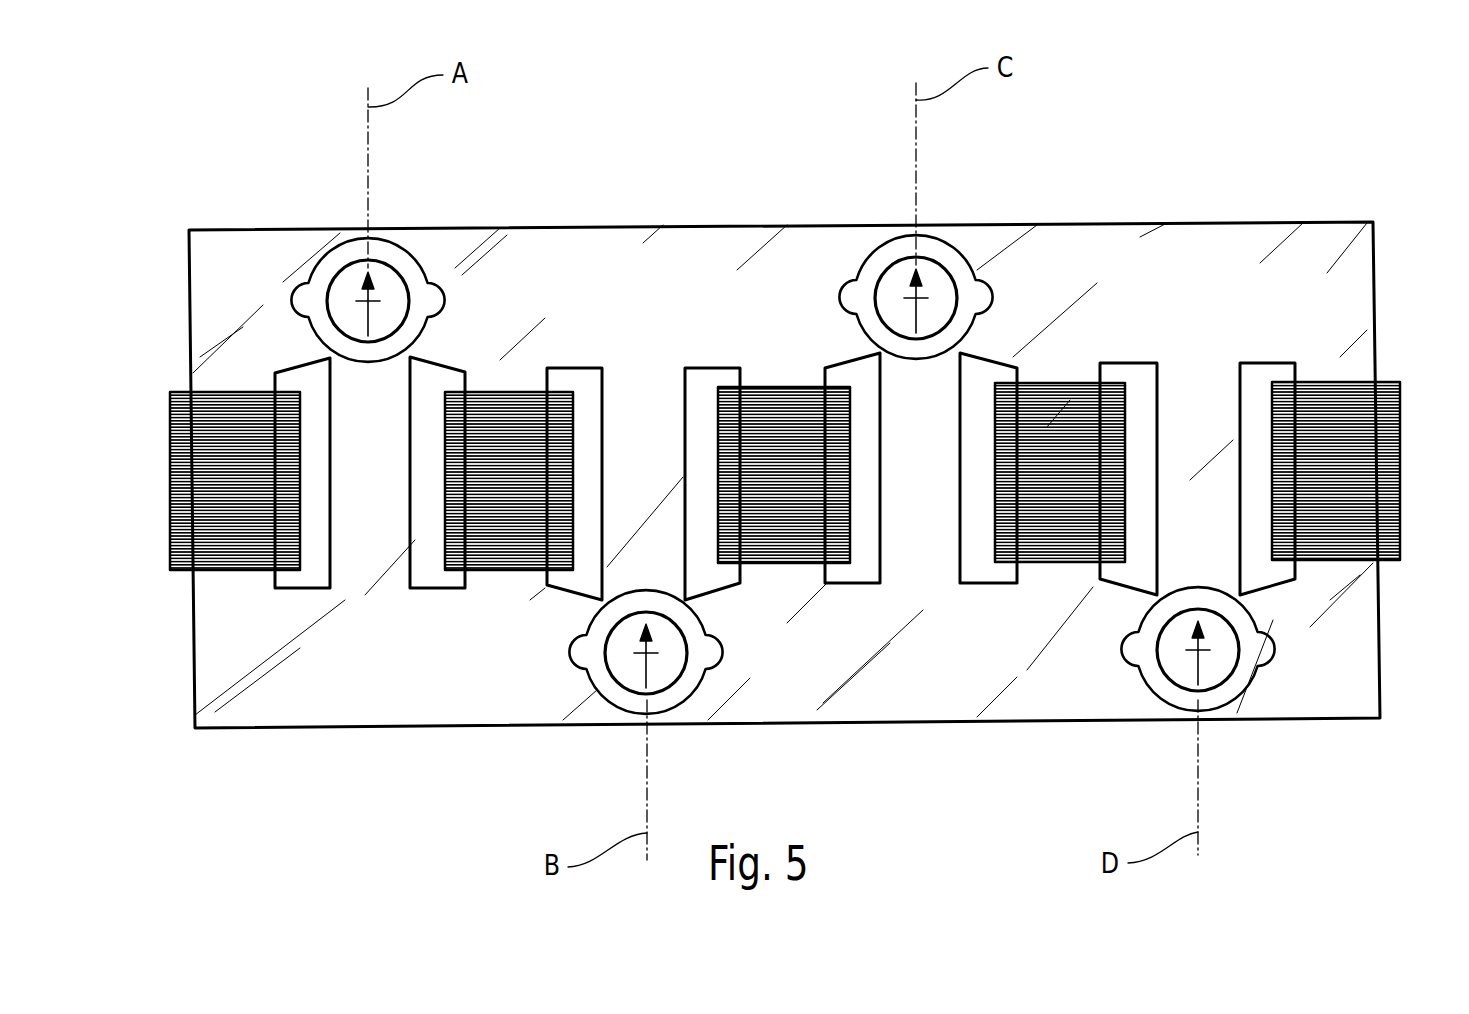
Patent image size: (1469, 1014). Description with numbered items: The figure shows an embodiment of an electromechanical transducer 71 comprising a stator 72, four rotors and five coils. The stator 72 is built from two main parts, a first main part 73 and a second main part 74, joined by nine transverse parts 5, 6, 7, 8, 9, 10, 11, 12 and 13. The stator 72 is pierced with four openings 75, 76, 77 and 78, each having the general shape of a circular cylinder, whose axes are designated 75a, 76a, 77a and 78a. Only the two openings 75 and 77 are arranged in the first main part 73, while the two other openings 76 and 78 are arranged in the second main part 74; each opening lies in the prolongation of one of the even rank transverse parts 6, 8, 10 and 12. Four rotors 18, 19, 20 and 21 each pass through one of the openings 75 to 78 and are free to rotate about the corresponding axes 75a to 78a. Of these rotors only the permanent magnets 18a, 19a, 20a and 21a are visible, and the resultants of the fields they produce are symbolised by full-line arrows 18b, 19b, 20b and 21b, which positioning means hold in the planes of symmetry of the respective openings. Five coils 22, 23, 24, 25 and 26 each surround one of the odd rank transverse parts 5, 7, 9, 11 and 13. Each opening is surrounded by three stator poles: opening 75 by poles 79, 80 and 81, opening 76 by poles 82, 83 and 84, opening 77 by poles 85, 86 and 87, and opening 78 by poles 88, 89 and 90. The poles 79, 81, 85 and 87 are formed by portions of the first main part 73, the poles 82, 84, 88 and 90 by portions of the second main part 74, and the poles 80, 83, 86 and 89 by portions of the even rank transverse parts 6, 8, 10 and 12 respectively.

The transverse part 5 is at (184, 600).
The transverse part 6 is at (349, 675).
The transverse part 7 is at (494, 673).
The transverse part 8 is at (655, 291).
The transverse part 9 is at (845, 641).
The transverse part 10 is at (977, 666).
The transverse part 11 is at (1076, 642).
The transverse part 12 is at (1161, 265).
The transverse part 13 is at (1402, 574).
The rotor 18 is at (408, 255).
The permanent magnet 18a is at (408, 255).
The magnetisation axis arrow 18b is at (350, 245).
The rotor 19 is at (606, 698).
The permanent magnet 19a is at (606, 698).
The magnetisation axis arrow 19b is at (695, 709).
The rotor 20 is at (886, 251).
The permanent magnet 20a is at (886, 251).
The magnetisation axis arrow 20b is at (913, 241).
The rotor 21 is at (1251, 695).
The permanent magnet 21a is at (1251, 695).
The magnetisation axis arrow 21b is at (1164, 707).
The coil 22 is at (211, 481).
The coil 23 is at (493, 599).
The coil 24 is at (784, 596).
The coil 25 is at (1060, 594).
The coil 26 is at (1370, 471).
The electromechanical transducer 71 is at (784, 387).
The stator 72 is at (1402, 293).
The first main part 73 is at (721, 200).
The second main part 74 is at (934, 746).
The opening 75 is at (412, 219).
The axis 75a is at (279, 205).
The opening 76 is at (619, 755).
The axis 76a is at (693, 731).
The opening 77 is at (956, 197).
The axis 77a is at (991, 204).
The opening 78 is at (1264, 745).
The axis 78a is at (1164, 727).
The stator pole 79 is at (289, 436).
The stator pole 80 is at (372, 390).
The stator pole 81 is at (444, 436).
The stator pole 82 is at (563, 520).
The stator pole 83 is at (647, 572).
The stator pole 84 is at (723, 520).
The stator pole 85 is at (842, 431).
The stator pole 86 is at (917, 387).
The stator pole 87 is at (995, 430).
The stator pole 88 is at (1122, 516).
The stator pole 89 is at (1199, 567).
The stator pole 90 is at (1275, 515).